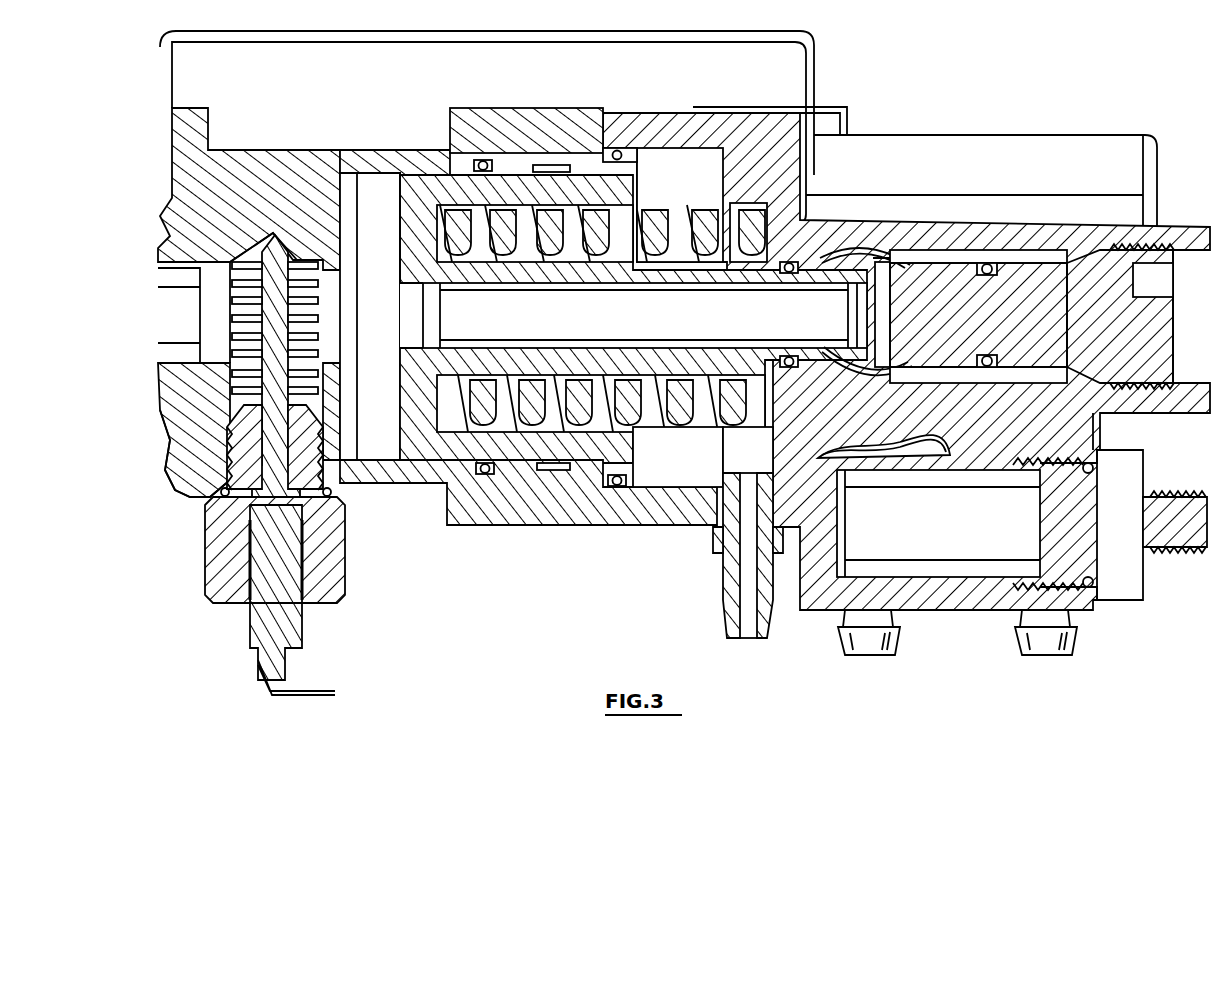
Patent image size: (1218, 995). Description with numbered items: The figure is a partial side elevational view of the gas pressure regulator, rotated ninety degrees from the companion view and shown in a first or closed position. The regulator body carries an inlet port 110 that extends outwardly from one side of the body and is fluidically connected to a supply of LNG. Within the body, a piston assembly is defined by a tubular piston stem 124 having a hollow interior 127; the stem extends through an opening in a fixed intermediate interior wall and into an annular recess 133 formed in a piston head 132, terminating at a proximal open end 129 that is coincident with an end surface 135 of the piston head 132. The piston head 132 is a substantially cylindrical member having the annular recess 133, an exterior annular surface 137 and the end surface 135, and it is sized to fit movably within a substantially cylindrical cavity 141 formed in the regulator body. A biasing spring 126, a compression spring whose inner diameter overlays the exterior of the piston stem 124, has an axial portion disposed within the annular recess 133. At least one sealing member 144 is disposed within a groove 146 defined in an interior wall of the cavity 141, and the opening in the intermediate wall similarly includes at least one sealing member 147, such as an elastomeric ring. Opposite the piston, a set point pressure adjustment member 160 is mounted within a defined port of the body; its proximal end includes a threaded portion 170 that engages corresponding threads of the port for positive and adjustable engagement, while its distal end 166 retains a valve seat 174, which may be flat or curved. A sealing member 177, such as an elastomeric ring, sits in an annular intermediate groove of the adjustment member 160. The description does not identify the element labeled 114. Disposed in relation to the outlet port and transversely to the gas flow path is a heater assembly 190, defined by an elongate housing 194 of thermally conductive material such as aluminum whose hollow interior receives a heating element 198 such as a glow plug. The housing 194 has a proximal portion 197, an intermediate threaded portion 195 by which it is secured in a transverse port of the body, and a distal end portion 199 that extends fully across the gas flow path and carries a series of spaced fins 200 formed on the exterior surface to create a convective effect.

The inlet port 110 is at (1143, 537).
The spring 114 is at (881, 262).
The tubular piston stem 124 is at (832, 278).
The biasing spring 126 is at (510, 215).
The hollow interior 127 is at (633, 312).
The proximal open end 129 is at (415, 327).
The piston head 132 is at (423, 460).
The annular recess 133 is at (452, 412).
The end surface 135 is at (400, 205).
The exterior annular surface 137 is at (520, 489).
The cylindrical cavity 141 is at (370, 233).
The sealing member 144 is at (484, 160).
The groove 146 is at (490, 472).
The sealing member 147 is at (789, 262).
The set point pressure adjustment member 160 is at (1030, 268).
The distal end 166 is at (945, 355).
The threaded portion 170 is at (1135, 255).
The valve seat 174 is at (887, 278).
The sealing member 177 is at (987, 262).
The heater assembly 190 is at (285, 409).
The elongate housing 194 is at (218, 572).
The intermediate threaded portion 195 is at (225, 445).
The proximal portion 197 is at (207, 532).
The heating element 198 is at (303, 630).
The distal end portion 199 is at (264, 258).
The fins 200 is at (168, 228).